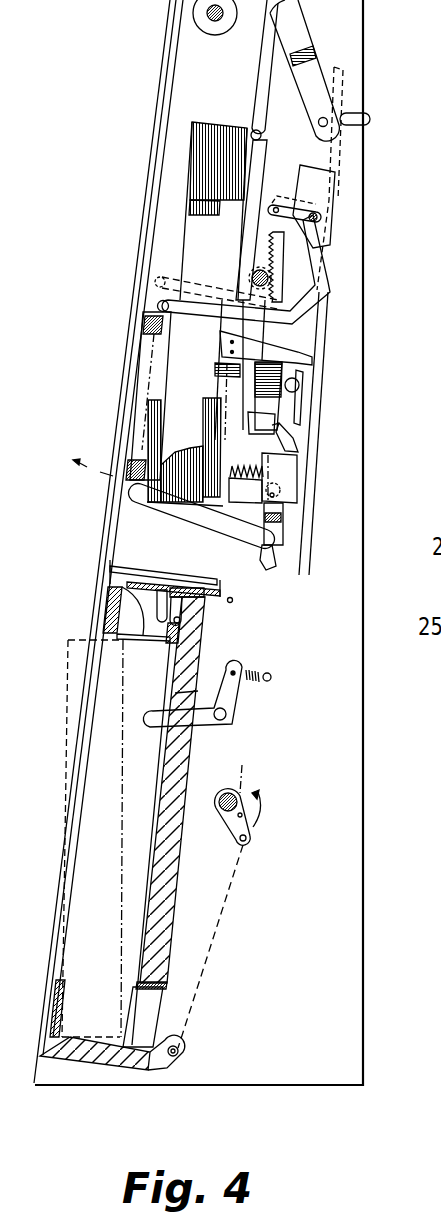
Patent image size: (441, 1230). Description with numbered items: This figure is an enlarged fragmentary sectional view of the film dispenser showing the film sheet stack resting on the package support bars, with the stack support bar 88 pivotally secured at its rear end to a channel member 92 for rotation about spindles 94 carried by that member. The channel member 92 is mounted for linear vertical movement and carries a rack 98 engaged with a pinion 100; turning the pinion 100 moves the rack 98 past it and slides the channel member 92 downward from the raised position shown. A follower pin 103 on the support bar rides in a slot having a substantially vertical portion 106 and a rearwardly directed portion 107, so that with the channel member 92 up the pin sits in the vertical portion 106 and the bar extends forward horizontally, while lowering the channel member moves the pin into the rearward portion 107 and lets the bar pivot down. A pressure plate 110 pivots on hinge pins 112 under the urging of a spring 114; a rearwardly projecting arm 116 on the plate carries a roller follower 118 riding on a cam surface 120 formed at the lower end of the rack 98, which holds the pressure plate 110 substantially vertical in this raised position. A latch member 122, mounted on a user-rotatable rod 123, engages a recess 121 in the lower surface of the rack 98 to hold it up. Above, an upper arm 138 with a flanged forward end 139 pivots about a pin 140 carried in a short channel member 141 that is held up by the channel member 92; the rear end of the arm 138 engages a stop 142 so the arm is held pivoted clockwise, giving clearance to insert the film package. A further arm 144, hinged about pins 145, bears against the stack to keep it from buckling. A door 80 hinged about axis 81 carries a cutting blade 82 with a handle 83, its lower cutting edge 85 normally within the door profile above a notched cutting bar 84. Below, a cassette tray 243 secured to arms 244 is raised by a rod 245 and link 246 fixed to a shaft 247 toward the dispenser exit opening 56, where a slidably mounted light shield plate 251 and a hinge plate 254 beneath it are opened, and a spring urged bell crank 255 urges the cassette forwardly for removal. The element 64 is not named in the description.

The dispenser exit opening 56 is at (143, 650).
The housing 64 is at (252, 96).
The door 80 is at (143, 373).
The axis 81 is at (145, 331).
The cutting blade 82 is at (117, 400).
The handle 83 is at (157, 301).
The notched cutting bar 84 is at (138, 484).
The lower cutting edge 85 is at (140, 462).
The stack support bar 88 is at (189, 529).
The channel member 92 is at (323, 313).
The spindles 94 is at (293, 493).
The rack 98 is at (283, 262).
The pinion 100 is at (258, 268).
The follower pin 103 is at (277, 527).
The substantially vertical portion 106 is at (273, 545).
The rearwardly directed portion 107 is at (297, 568).
The pressure plate 110 is at (254, 163).
The hinge pins 112 is at (262, 131).
The spring 114 is at (240, 447).
The rearwardly projecting arm 116 is at (252, 354).
The roller follower 118 is at (299, 386).
The cam surface 120 is at (280, 377).
The recess 121 is at (262, 418).
The latch member 122 is at (285, 428).
The rod 123 is at (290, 450).
The upper arm 138 is at (310, 35).
The flanged forward end 139 is at (267, 27).
The pin 140 is at (330, 115).
The short channel member 141 is at (343, 70).
The stop 142 is at (361, 113).
The arm 144 is at (195, 318).
The pins 145 is at (317, 213).
The tray 243 is at (82, 1062).
The arms 244 is at (185, 1050).
The rod 245 is at (210, 968).
The link 246 is at (255, 837).
The shaft 247 is at (238, 793).
The slide plate 251 is at (212, 600).
The light shielding hinge plate 254 is at (110, 603).
The spring urged bell crank 255 is at (200, 727).